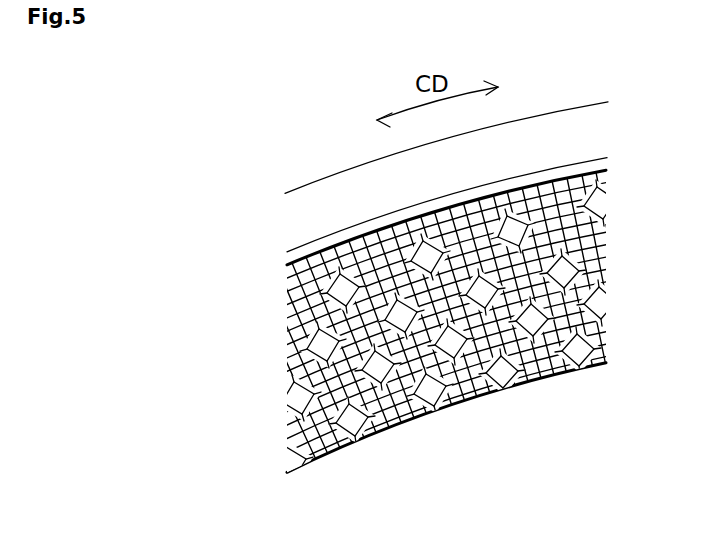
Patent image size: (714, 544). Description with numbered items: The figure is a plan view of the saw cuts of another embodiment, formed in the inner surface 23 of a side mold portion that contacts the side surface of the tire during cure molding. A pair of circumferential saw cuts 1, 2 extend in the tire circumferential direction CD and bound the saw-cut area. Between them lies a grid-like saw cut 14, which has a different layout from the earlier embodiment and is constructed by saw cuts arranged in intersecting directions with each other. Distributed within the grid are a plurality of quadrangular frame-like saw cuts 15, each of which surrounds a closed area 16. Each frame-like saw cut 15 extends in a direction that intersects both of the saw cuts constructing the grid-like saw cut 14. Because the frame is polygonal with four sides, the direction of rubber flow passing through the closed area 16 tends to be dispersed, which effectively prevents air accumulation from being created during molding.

The circumferential saw cut 1 is at (323, 250).
The circumferential saw cut 2 is at (567, 374).
The grid-like saw cut 14 is at (492, 385).
The quadrangular frame-like saw cut 15 is at (363, 442).
The closed area 16 is at (434, 397).
The inner surface 23 is at (551, 132).